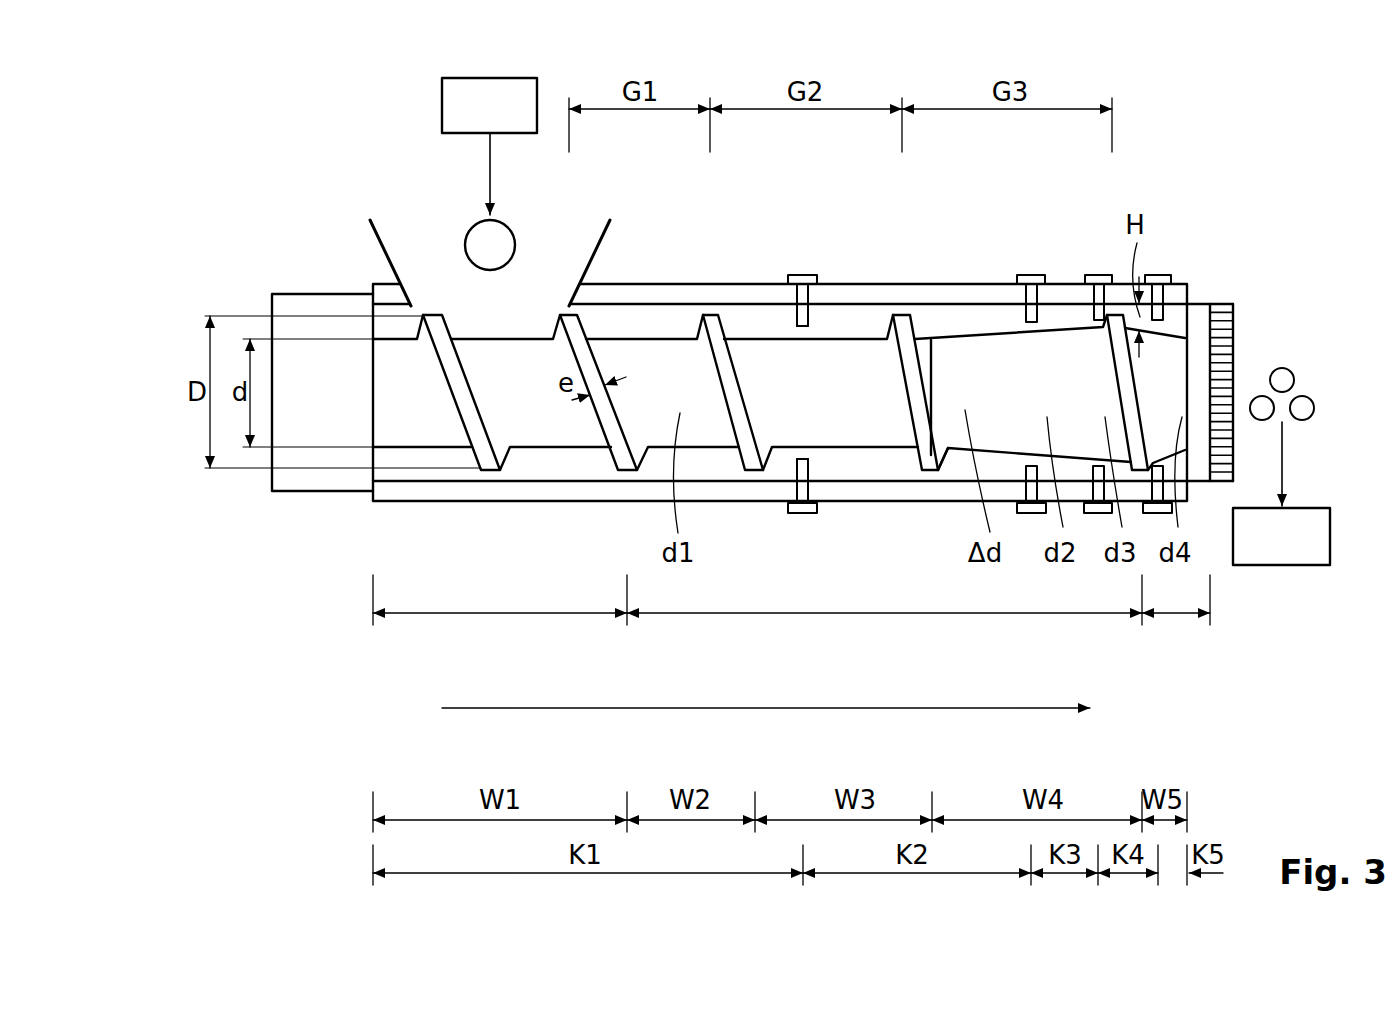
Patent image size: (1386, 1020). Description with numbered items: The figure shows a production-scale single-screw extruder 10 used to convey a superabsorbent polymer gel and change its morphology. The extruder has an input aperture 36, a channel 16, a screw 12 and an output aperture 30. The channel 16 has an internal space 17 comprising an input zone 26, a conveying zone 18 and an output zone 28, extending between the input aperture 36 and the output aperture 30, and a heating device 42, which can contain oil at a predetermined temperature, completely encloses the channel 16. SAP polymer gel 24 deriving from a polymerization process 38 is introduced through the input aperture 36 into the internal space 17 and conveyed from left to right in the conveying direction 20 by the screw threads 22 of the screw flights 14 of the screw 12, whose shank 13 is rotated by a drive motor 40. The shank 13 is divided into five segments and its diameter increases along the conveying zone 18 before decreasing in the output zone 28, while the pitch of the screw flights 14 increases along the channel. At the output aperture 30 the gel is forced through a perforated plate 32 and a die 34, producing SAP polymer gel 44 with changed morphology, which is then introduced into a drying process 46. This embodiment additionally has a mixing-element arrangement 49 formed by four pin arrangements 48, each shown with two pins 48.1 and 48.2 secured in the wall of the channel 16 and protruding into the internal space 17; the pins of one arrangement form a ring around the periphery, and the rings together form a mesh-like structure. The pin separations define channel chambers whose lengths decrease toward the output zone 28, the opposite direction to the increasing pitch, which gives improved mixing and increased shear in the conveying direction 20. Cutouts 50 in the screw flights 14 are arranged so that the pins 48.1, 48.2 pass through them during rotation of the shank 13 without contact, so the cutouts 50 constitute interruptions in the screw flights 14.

The single-screw extruder 10 is at (1264, 120).
The screw 12 is at (668, 332).
The shank 13 is at (853, 407).
The screw flights 14 is at (890, 454).
The channel 16 is at (538, 484).
The internal space 17 is at (587, 460).
The conveying zone 18 is at (883, 618).
The conveying direction 20 is at (803, 712).
The screw threads 22 is at (930, 460).
The SAP polymer gel 24 is at (508, 240).
The input zone 26 is at (503, 618).
The output zone 28 is at (1168, 618).
The output aperture 30 is at (1222, 295).
The perforated plate 32 is at (1198, 313).
The die 34 is at (1225, 327).
The input aperture 36 is at (422, 228).
The polymerization process 38 is at (442, 110).
The drive motor 40 is at (310, 293).
The heating device 42 is at (437, 493).
The SAP polymer gel with changed morphology 44 is at (1287, 382).
The drying process 46 is at (1283, 573).
The pin arrangement 48 is at (798, 275).
The pin 48.1 is at (803, 293).
The pin 48.2 is at (803, 510).
The mixing-element arrangement 49 is at (834, 269).
The cutouts 50 is at (803, 333).